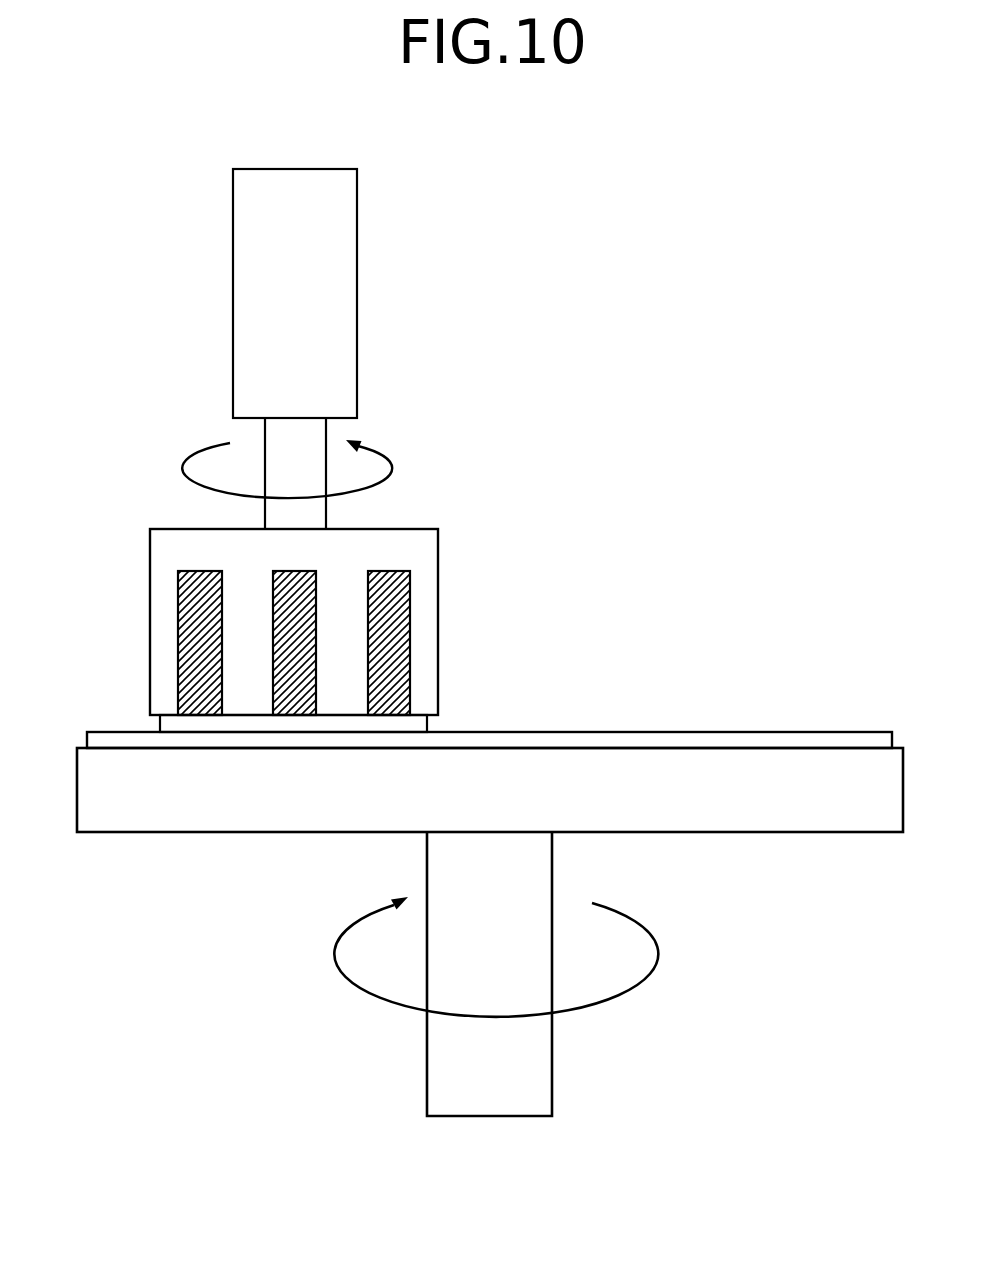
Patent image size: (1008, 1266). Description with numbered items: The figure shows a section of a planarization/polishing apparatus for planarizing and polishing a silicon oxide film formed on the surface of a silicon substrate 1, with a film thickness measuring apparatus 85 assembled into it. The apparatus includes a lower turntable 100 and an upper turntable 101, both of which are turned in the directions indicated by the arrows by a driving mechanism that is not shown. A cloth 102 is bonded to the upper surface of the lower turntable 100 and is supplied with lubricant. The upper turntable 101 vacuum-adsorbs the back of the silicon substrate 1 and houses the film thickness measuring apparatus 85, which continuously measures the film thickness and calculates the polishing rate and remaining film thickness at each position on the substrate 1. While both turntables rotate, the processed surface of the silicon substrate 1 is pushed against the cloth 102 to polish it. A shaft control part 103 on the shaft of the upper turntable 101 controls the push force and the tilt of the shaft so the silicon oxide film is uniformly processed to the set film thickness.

The shaft control part 103 is at (357, 295).
The upper turntable 101 is at (438, 559).
The film thickness measuring apparatus 85 is at (184, 619).
The silicon substrate 1 is at (412, 727).
The cloth 102 is at (822, 733).
The lower turntable 100 is at (818, 832).